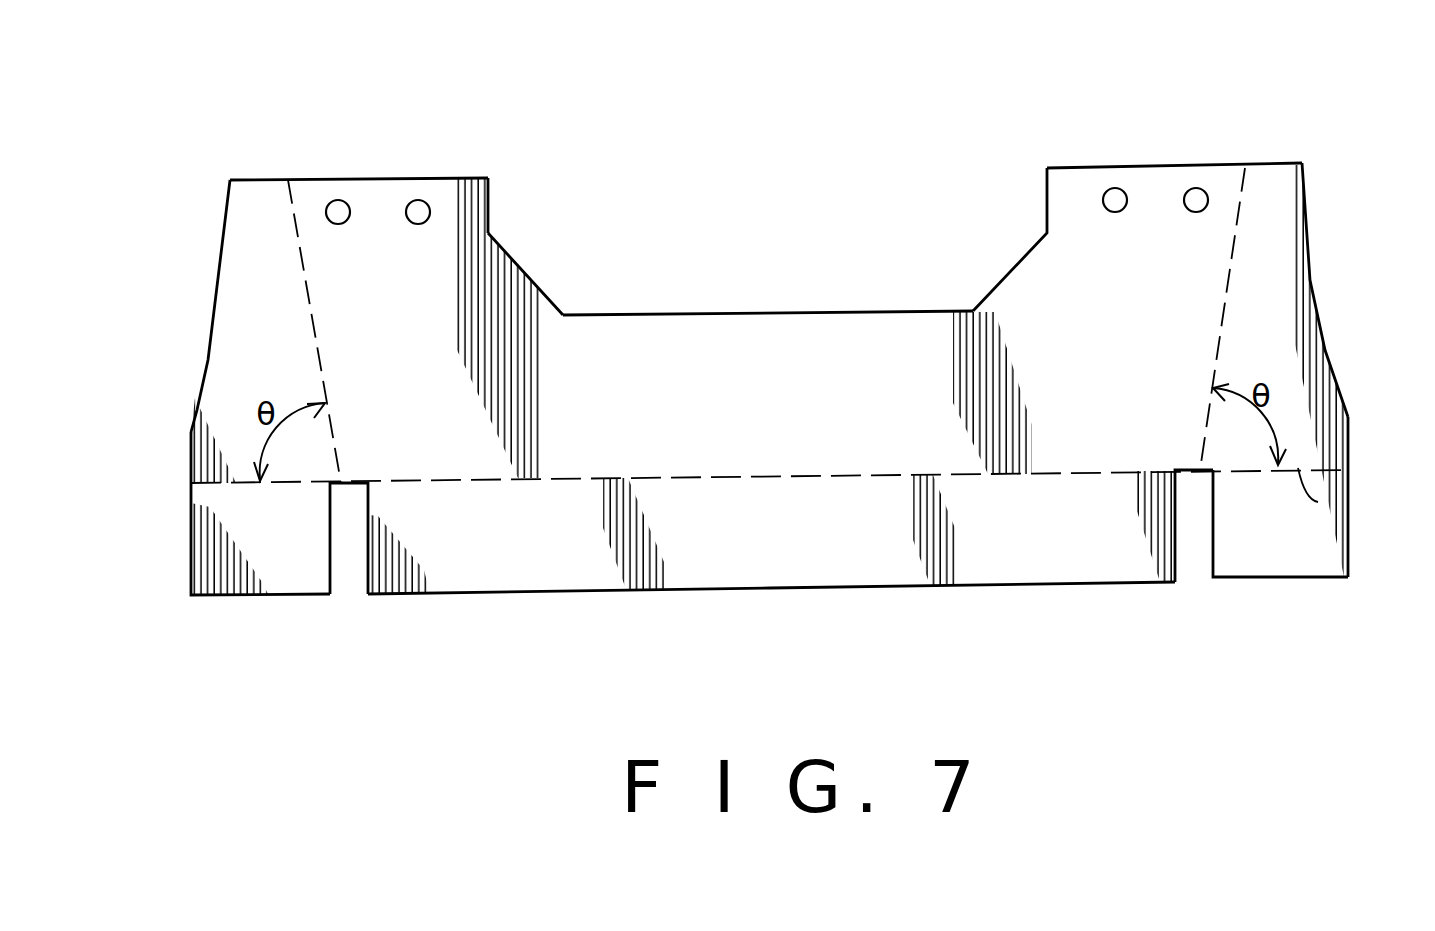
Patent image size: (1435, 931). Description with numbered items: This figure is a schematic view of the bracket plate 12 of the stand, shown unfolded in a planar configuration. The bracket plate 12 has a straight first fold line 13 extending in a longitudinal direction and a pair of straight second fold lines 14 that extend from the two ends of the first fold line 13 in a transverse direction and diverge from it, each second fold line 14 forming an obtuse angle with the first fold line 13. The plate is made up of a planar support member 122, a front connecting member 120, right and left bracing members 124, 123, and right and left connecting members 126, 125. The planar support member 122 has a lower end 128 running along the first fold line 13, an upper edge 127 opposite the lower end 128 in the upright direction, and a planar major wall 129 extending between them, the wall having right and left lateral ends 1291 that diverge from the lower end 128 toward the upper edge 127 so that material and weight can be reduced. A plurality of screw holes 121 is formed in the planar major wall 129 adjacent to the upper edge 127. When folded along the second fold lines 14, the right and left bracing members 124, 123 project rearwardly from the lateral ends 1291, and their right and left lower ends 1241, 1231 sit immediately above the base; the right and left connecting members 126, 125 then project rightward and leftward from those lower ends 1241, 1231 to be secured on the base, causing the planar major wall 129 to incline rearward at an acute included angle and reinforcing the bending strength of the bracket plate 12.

The bracket plate 12 is at (1182, 130).
The front connecting member 120 is at (598, 568).
The screw holes 121 is at (430, 212).
The planar support member 122 is at (758, 342).
The left bracing member 123 is at (273, 330).
The right bracing member 124 is at (1307, 327).
The left connecting member 125 is at (213, 548).
The right connecting member 126 is at (1262, 567).
The upper edge 127 is at (363, 178).
The lower end 128 is at (877, 477).
The planar major wall 129 is at (630, 408).
The first fold line 13 is at (1032, 473).
The second fold lines 14 is at (303, 270).
The left lower end 1231 is at (297, 483).
The right lower end 1241 is at (1333, 507).
The lateral ends 1291 is at (333, 351).